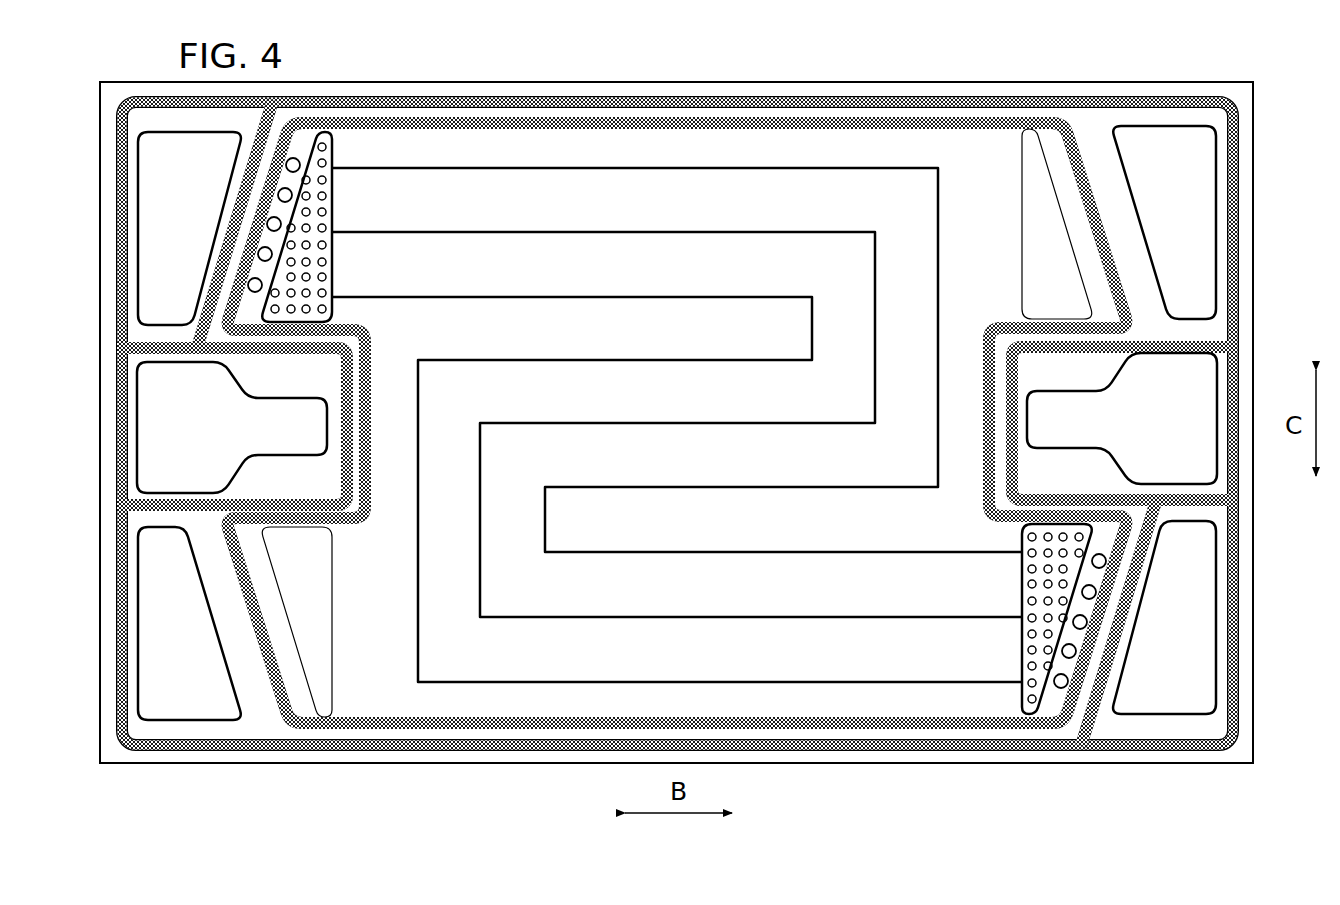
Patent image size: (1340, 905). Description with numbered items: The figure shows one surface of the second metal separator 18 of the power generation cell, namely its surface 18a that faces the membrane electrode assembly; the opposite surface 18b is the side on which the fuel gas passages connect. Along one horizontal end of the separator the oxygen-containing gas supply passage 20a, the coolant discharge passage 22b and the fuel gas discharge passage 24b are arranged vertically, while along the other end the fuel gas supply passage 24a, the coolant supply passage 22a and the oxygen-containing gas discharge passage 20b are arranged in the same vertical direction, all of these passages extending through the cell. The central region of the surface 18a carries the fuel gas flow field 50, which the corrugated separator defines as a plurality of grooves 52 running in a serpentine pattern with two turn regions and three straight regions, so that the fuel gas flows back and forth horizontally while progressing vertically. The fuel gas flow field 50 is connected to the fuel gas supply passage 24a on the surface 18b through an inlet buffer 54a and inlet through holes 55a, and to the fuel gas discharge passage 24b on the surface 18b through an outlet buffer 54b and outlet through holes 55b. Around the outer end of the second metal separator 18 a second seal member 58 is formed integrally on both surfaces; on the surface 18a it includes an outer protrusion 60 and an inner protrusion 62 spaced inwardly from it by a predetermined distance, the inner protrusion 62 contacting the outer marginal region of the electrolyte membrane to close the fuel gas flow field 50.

The second metal separator 18 is at (999, 63).
The surface 18a is at (921, 754).
The surface 18b is at (973, 756).
The oxygen-containing gas supply passage 20a is at (1164, 222).
The oxygen-containing gas discharge passage 20b is at (189, 623).
The coolant supply passage 22a is at (232, 427).
The coolant discharge passage 22b is at (1122, 418).
The fuel gas supply passage 24a is at (189, 228).
The fuel gas discharge passage 24b is at (1164, 617).
The fuel gas flow field 50 is at (495, 158).
The grooves 52 is at (749, 166).
The inlet buffer 54a is at (333, 178).
The outlet buffer 54b is at (1023, 628).
The inlet through holes 55a is at (272, 222).
The outlet through holes 55b is at (1083, 623).
The second seal member 58 is at (851, 94).
The outer protrusion 60 is at (611, 101).
The inner protrusion 62 is at (672, 119).